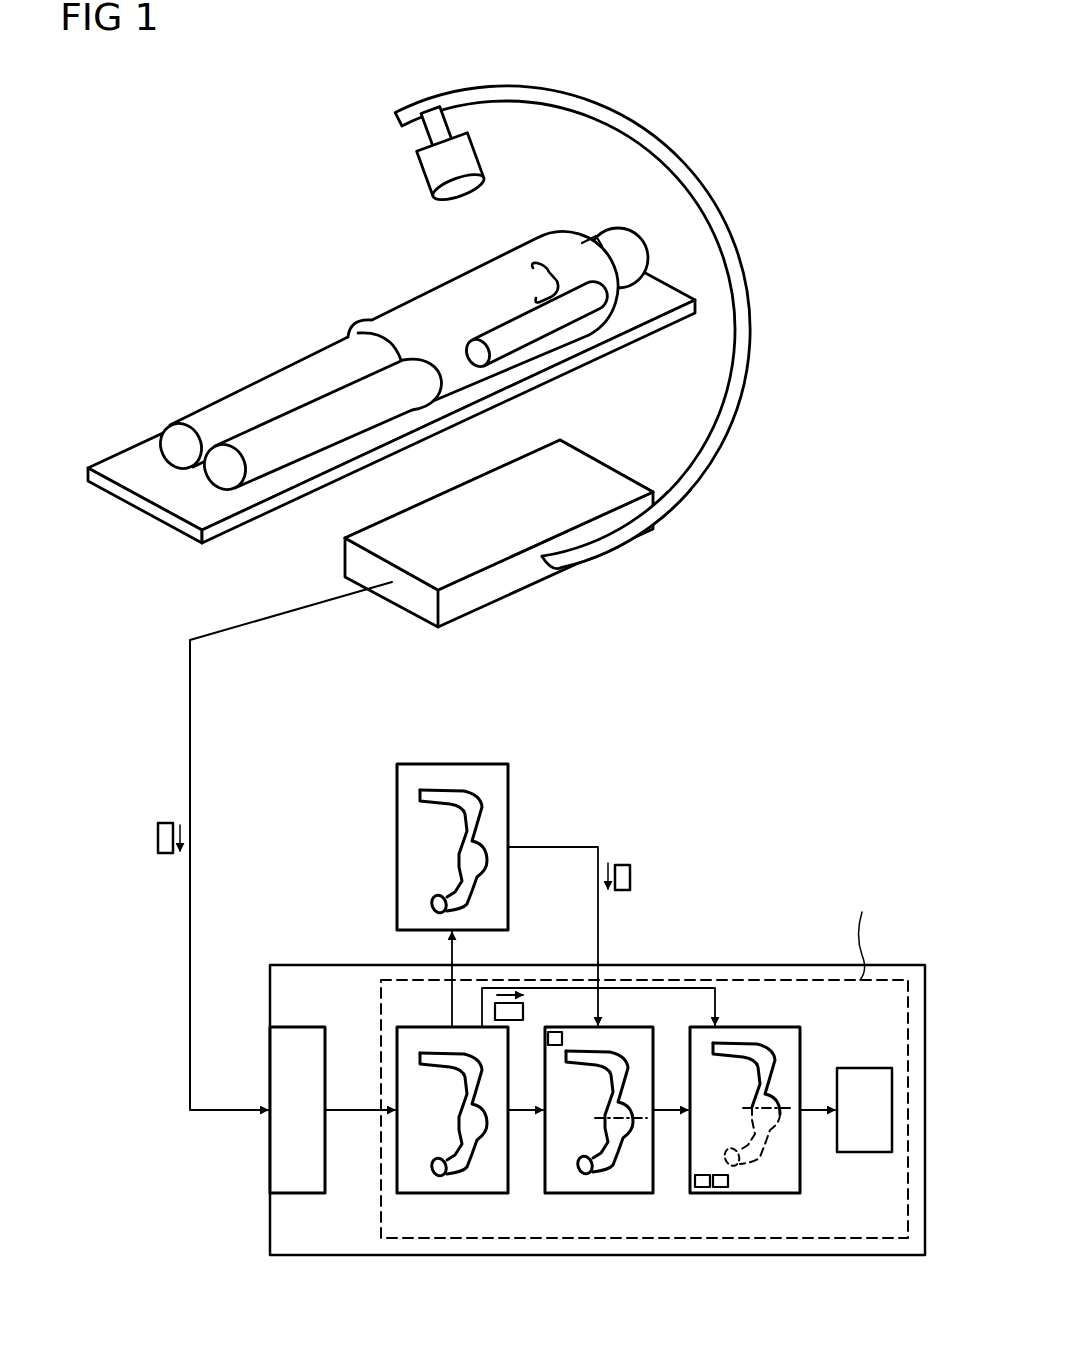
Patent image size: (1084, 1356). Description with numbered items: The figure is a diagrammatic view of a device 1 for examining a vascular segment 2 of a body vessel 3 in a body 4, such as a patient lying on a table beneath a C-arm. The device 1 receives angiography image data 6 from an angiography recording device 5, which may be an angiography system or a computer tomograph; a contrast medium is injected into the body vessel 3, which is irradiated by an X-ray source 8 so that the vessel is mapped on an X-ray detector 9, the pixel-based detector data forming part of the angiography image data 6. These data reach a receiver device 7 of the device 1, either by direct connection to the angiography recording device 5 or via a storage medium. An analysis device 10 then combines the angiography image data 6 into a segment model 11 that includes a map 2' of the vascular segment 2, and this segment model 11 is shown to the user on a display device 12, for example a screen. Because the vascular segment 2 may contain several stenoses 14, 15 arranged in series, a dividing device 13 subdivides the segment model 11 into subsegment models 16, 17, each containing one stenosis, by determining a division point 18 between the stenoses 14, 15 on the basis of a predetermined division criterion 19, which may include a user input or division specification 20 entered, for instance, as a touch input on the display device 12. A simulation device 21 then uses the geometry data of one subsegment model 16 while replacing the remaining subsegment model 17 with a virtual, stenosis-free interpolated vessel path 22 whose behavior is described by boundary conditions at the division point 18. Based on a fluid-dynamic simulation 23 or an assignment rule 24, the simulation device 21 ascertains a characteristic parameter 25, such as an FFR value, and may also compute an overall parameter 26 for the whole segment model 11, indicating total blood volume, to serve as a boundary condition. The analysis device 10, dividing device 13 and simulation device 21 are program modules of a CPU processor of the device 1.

The device 1 is at (818, 965).
The vascular segment 2 is at (545, 243).
The map of the vascular segment 2' is at (379, 1057).
The body vessel 3 is at (521, 248).
The body 4 is at (430, 298).
The angiography recording device 5 is at (673, 80).
The angiography image data 6 is at (158, 840).
The receiver device 7 is at (301, 1027).
The X-ray source 8 is at (424, 182).
The X-ray detector 9 is at (345, 560).
The analysis device 10 is at (418, 1193).
The segment model 11 is at (605, 1060).
The display device 12 is at (397, 855).
The dividing device 13 is at (571, 1193).
The stenosis 14 is at (489, 1095).
The stenosis 15 is at (481, 1151).
The subsegment model 16 is at (625, 1062).
The subsegment model 17 is at (605, 1172).
The division point 18 is at (600, 1118).
The division criterion 19 is at (555, 1032).
The division specification 20 is at (623, 865).
The simulation device 21 is at (783, 1193).
The interpolated vessel path 22 is at (757, 1150).
The fluid-dynamic simulation 23 is at (700, 1187).
The assignment rule 24 is at (719, 1187).
The characteristic parameter 25 is at (863, 1068).
The overall parameter 26 is at (523, 1013).